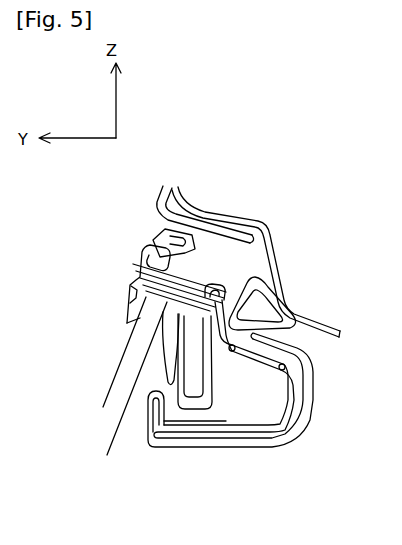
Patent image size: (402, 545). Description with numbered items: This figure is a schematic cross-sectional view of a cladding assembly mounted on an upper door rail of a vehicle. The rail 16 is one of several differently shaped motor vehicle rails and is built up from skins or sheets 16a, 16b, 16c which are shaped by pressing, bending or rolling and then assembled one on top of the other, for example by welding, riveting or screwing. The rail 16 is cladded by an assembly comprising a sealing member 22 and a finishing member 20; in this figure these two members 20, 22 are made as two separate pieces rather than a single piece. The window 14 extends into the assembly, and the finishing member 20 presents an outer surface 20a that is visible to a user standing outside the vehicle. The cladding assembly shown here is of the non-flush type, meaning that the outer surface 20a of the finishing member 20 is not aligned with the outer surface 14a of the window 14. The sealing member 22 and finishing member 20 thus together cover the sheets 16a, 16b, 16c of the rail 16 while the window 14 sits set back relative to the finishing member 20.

The window 14 is at (98, 394).
The outer surface of the window 14a is at (108, 392).
The rail 16 is at (250, 345).
The skin or sheet 16a is at (310, 395).
The skin or sheet 16b is at (216, 401).
The skin or sheet 16c is at (192, 282).
The finishing member 20 is at (131, 284).
The outer surface of the finishing member 20a is at (129, 290).
The sealing member 22 is at (157, 237).